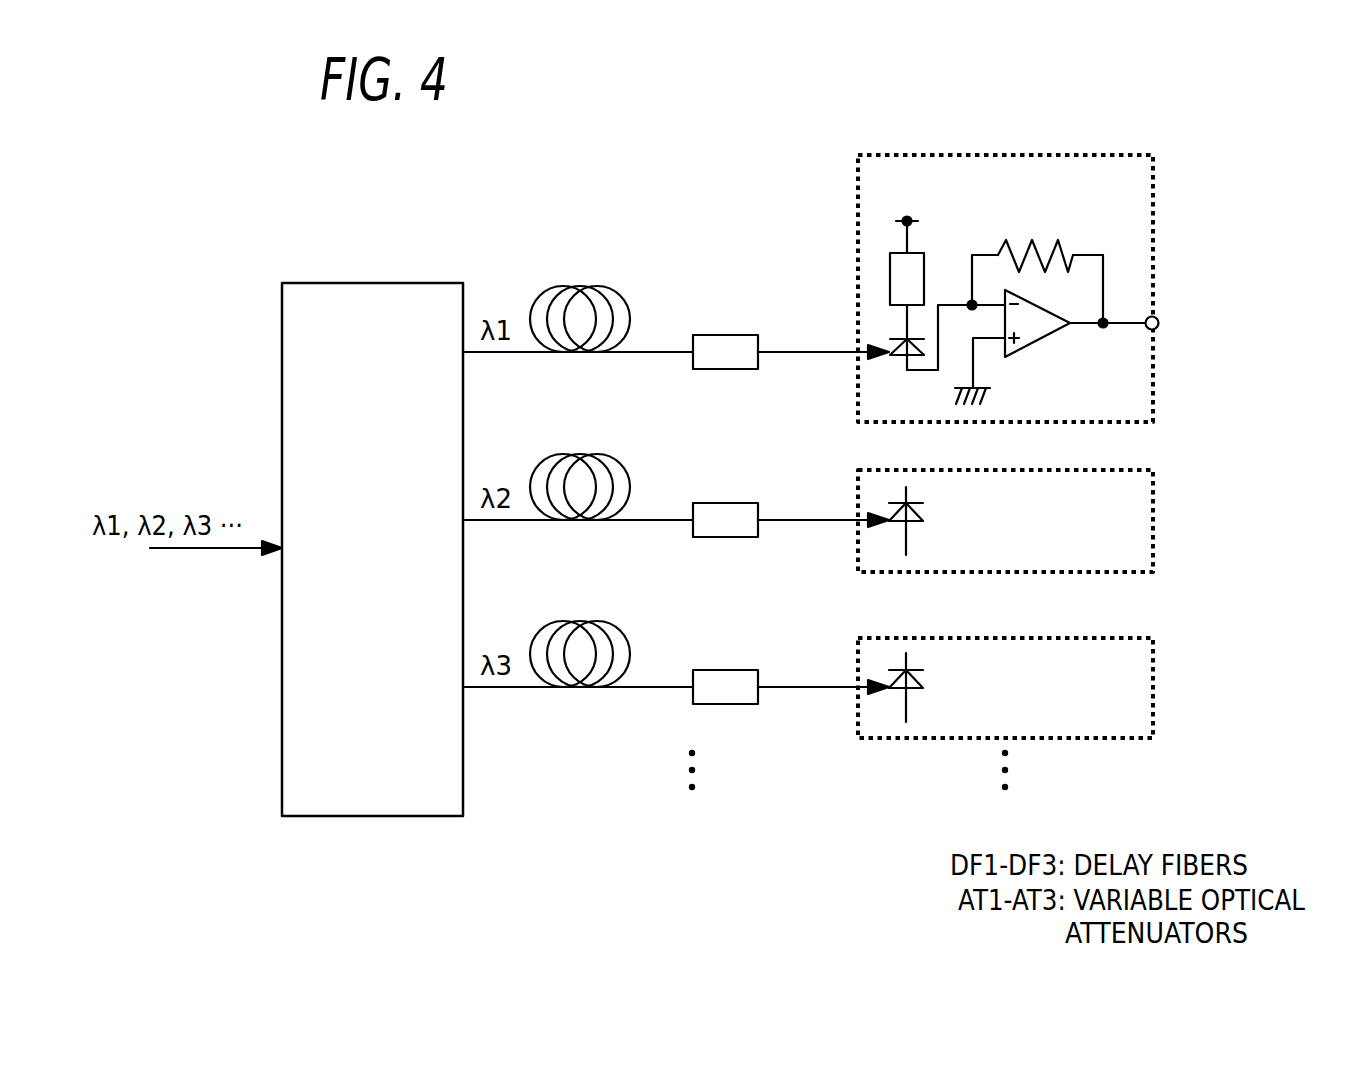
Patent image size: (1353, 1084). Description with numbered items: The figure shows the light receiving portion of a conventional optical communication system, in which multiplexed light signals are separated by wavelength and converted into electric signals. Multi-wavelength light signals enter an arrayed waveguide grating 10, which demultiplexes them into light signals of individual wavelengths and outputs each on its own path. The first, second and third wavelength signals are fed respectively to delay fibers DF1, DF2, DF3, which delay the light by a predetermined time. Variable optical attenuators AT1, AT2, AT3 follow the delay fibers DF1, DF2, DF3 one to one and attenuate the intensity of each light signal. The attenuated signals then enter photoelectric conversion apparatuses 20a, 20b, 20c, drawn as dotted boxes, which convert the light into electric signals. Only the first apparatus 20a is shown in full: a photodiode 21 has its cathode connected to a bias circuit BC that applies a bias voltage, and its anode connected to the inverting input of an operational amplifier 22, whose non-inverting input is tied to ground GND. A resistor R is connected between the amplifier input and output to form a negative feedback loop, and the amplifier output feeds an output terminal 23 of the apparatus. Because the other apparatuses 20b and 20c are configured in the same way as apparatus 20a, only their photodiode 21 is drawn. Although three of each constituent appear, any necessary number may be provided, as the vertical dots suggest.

The arrayed waveguide grating 10 is at (282, 645).
The photoelectric conversion apparatus 20a is at (1155, 390).
The photoelectric conversion apparatus 20b is at (1155, 522).
The photoelectric conversion apparatus 20c is at (1155, 690).
The photodiode 21 is at (890, 340).
The operational amplifier 22 is at (1050, 340).
The output terminal 23 is at (1159, 323).
The bias circuit BC is at (890, 270).
The resistor R is at (1040, 240).
The ground GND is at (1009, 386).
The delay fiber DF1 is at (628, 300).
The delay fiber DF2 is at (628, 468).
The delay fiber DF3 is at (628, 635).
The variable optical attenuator AT1 is at (745, 335).
The variable optical attenuator AT2 is at (745, 503).
The variable optical attenuator AT3 is at (745, 670).